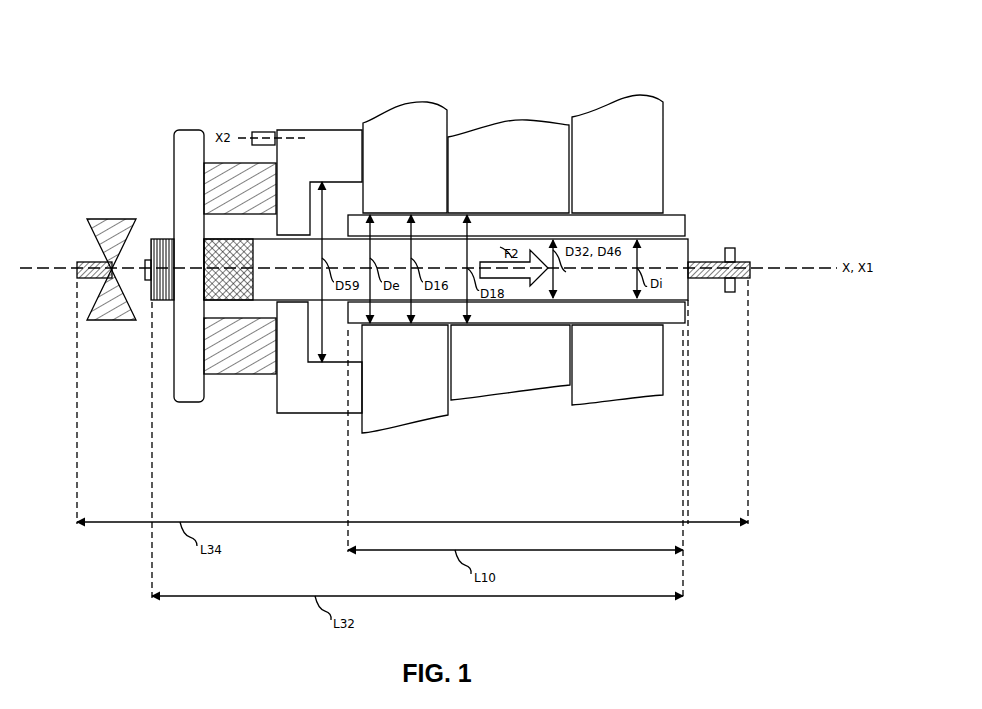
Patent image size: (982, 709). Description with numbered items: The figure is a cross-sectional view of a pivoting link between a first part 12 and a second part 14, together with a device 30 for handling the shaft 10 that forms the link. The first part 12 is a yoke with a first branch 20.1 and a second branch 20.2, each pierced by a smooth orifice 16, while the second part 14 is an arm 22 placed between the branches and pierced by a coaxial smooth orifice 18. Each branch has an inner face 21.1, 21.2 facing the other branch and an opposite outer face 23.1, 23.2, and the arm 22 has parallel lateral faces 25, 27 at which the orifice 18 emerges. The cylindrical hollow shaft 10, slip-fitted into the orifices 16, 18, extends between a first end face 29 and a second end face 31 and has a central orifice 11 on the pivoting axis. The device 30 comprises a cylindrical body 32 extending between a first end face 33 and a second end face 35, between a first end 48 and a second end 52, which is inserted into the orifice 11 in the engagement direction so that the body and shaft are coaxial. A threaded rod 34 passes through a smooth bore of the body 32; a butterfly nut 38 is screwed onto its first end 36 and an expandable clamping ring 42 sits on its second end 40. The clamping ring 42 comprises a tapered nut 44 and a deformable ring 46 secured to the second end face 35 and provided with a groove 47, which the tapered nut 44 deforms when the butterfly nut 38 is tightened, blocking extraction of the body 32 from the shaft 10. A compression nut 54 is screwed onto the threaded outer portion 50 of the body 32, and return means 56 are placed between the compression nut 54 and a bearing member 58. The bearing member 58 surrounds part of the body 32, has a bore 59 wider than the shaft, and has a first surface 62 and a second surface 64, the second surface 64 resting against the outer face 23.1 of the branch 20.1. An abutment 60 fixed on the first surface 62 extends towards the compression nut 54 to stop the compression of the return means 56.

The shaft 10 is at (662, 315).
The orifice 11 is at (660, 233).
The first part 12 is at (388, 425).
The second part 14 is at (465, 385).
The orifice 16 is at (400, 328).
The orifice 18 is at (535, 327).
The first branch 20.1 is at (372, 135).
The second branch 20.2 is at (625, 100).
The inner face 21.1 is at (449, 122).
The inner face 21.2 is at (570, 165).
The arm 22 is at (498, 135).
The outer face 23.1 is at (358, 193).
The outer face 23.2 is at (665, 122).
The lateral face 25 is at (573, 382).
The lateral face 27 is at (447, 387).
The first end face 29 is at (700, 225).
The device 30 is at (117, 108).
The second end face 31 is at (342, 313).
The body 32 is at (300, 285).
The first end face 33 is at (145, 246).
The threaded rod 34 is at (73, 278).
The second end face 35 is at (688, 285).
The first end 36 is at (80, 260).
The butterfly nut 38 is at (113, 223).
The second end 40 is at (745, 283).
The expandable clamping ring 42 is at (752, 245).
The nut 44 is at (745, 292).
The ring 46 is at (756, 236).
The groove 47 is at (705, 283).
The first end 48 is at (152, 305).
The threaded outer portion 50 is at (222, 287).
The second end 52 is at (688, 228).
The compression nut 54 is at (187, 142).
The return means 56 is at (216, 372).
The bearing member 58 is at (297, 133).
The bore 59 is at (312, 345).
The abutment 60 is at (273, 155).
The first surface 62 is at (266, 245).
The second surface 64 is at (367, 148).